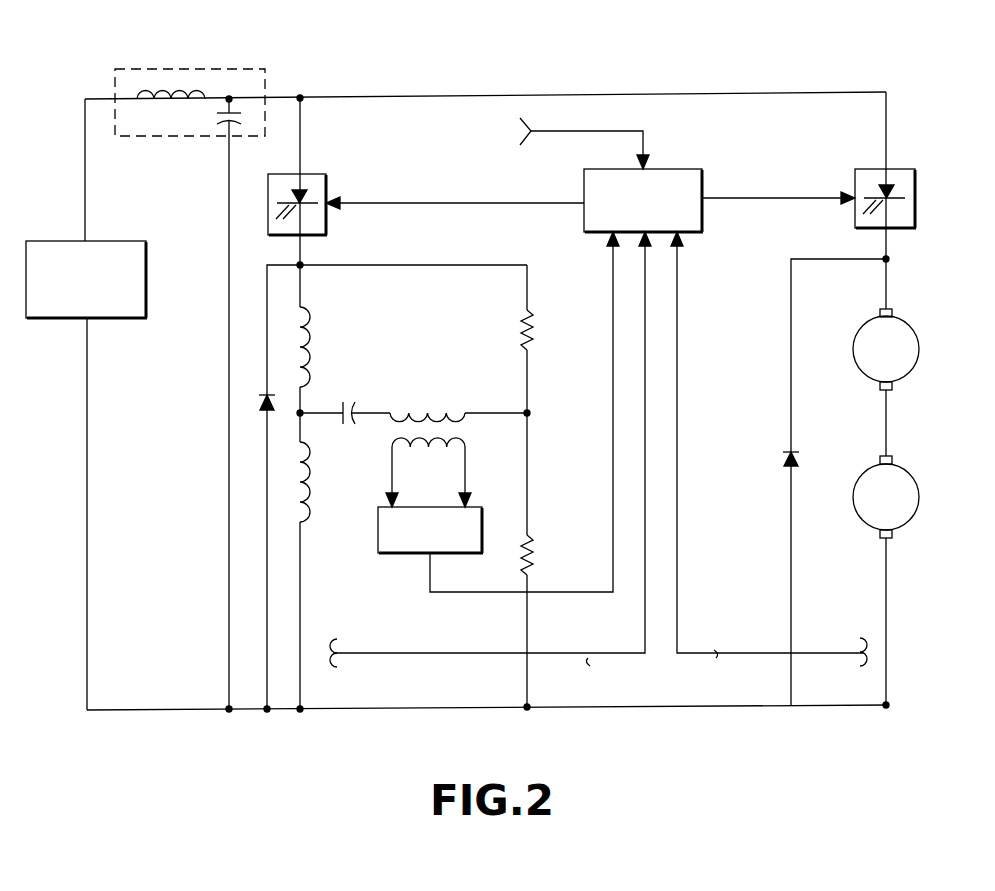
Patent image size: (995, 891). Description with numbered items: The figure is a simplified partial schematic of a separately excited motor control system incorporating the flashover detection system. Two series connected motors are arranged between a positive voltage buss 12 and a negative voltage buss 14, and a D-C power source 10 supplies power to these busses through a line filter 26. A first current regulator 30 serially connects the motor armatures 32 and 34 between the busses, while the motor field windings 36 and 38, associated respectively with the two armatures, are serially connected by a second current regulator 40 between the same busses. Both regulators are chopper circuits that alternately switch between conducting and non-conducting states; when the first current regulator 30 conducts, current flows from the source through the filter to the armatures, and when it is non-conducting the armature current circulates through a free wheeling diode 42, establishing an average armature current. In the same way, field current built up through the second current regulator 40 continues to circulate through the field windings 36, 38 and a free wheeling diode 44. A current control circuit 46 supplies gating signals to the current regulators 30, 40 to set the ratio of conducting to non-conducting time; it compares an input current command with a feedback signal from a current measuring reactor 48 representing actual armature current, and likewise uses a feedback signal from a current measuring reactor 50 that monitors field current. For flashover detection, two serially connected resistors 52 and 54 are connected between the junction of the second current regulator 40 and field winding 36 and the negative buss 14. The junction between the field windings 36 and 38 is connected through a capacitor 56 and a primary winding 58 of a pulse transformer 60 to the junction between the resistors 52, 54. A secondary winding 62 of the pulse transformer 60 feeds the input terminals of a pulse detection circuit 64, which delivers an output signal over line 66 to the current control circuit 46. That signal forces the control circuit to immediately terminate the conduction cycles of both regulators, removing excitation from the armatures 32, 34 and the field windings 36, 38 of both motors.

The D-C power source 10 is at (146, 241).
The positive voltage buss 12 is at (693, 93).
The negative voltage buss 14 is at (712, 707).
The line filter 26 is at (228, 69).
The first current regulator 30 is at (910, 162).
The motor armature 32 is at (909, 316).
The motor armature 34 is at (914, 479).
The motor field winding 36 is at (312, 337).
The motor field winding 38 is at (313, 479).
The second current regulator 40 is at (321, 174).
The free wheeling diode 42 is at (780, 448).
The free wheeling diode 44 is at (260, 398).
The current control circuit 46 is at (694, 174).
The current measuring reactor 48 is at (869, 630).
The current measuring reactor 50 is at (324, 630).
The resistor 52 is at (520, 328).
The resistor 54 is at (532, 548).
The capacitor 56 is at (346, 402).
The primary winding 58 is at (431, 405).
The pulse transformer 60 is at (380, 443).
The secondary winding 62 is at (452, 454).
The pulse detection circuit 64 is at (419, 542).
The line 66 is at (612, 320).